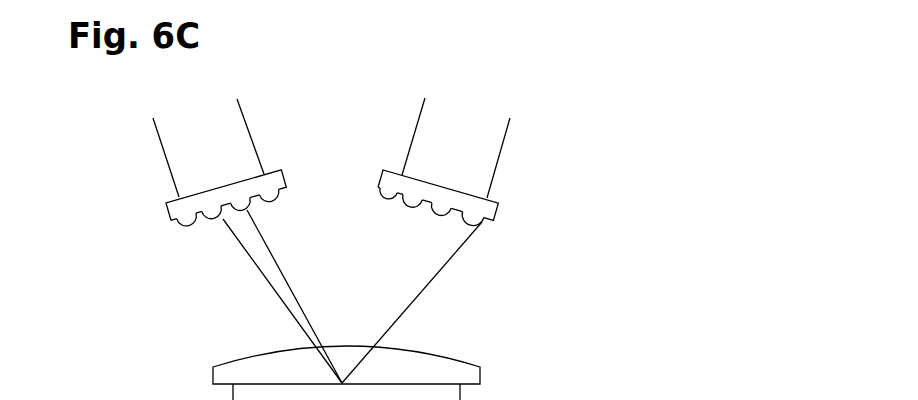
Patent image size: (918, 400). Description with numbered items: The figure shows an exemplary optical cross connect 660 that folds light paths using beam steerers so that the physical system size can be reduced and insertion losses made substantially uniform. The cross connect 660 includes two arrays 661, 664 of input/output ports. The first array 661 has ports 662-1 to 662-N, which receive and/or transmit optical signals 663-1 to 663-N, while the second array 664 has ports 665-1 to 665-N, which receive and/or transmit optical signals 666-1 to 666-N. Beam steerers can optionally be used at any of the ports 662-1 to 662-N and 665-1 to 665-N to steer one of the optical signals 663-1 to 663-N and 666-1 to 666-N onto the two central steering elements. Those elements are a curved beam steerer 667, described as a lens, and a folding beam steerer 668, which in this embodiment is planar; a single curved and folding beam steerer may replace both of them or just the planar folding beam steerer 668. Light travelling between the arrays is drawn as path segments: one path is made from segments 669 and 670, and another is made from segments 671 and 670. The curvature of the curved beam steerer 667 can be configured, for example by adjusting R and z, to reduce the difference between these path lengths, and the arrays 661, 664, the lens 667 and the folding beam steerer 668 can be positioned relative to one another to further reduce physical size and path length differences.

The cross connect 660 is at (667, 278).
The array 661 is at (162, 222).
The port 662-1 is at (191, 226).
The port 662-N is at (279, 195).
The optical signal 663-1 is at (168, 165).
The optical signal 663-N is at (243, 116).
The array 664 is at (508, 215).
The port 665-1 is at (387, 196).
The port 665-N is at (487, 223).
The optical signal 666-1 is at (425, 110).
The optical signal 666-N is at (500, 157).
The curved beam steerer 667 is at (420, 347).
The folding beam steerer 668 is at (463, 396).
The segment 669 is at (276, 294).
The segment 670 is at (430, 283).
The segment 671 is at (287, 291).